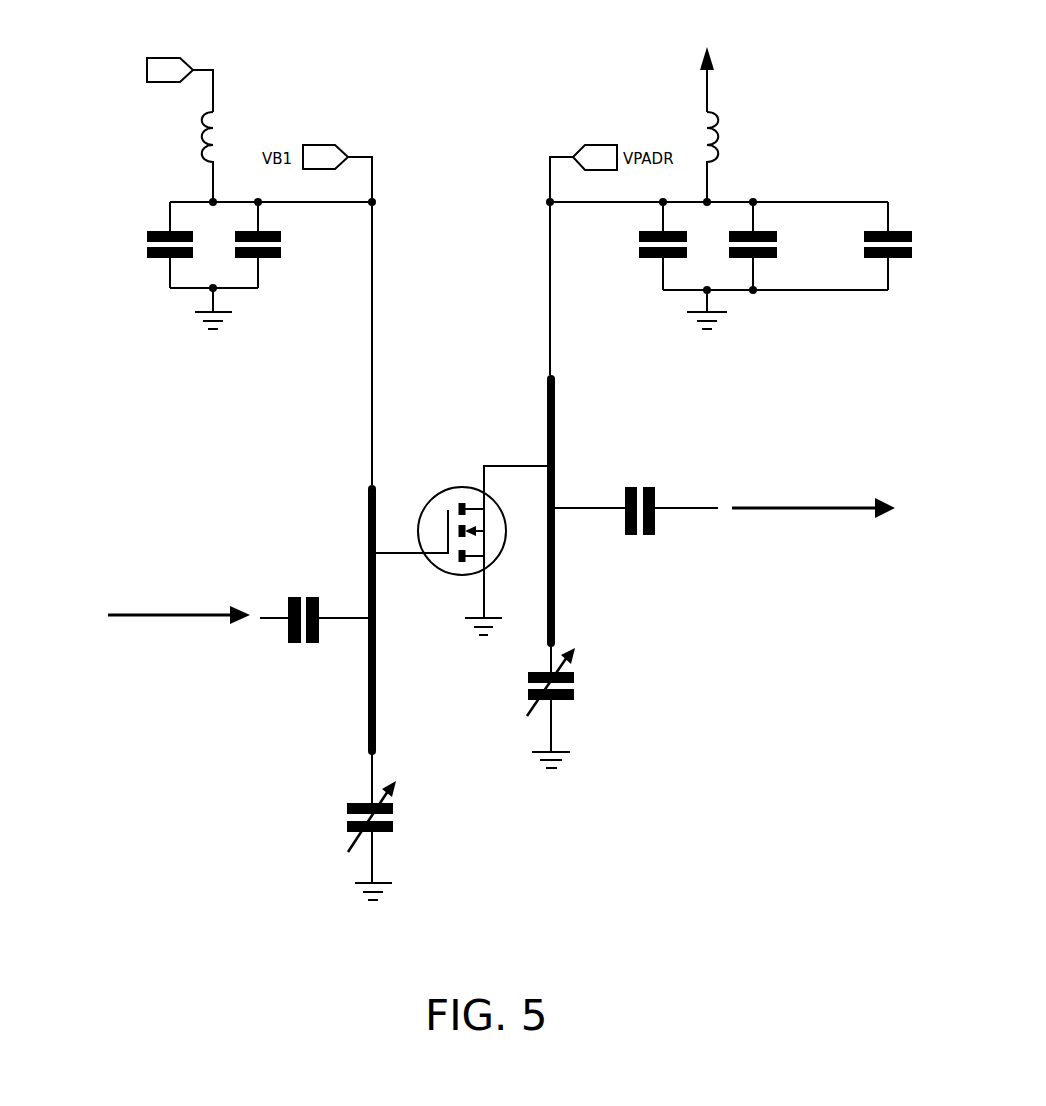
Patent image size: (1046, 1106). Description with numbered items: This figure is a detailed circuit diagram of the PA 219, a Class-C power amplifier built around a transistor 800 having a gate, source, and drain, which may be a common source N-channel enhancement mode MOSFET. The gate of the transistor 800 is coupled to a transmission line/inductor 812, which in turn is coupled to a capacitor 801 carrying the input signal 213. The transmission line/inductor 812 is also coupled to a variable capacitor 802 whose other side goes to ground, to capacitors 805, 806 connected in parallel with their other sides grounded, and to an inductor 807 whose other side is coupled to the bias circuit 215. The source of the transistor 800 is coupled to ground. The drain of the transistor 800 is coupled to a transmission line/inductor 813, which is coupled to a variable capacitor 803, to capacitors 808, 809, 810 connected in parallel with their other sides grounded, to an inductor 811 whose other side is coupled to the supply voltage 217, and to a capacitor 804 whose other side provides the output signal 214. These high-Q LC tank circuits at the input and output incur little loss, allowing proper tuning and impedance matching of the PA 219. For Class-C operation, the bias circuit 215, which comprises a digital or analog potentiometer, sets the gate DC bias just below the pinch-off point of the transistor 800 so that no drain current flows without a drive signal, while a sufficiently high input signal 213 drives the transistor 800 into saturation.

The input signal 213 is at (120, 555).
The output signal 214 is at (863, 437).
The bias circuit 215 is at (168, 55).
The supply voltage 217 is at (753, 30).
The PA 219 is at (860, 102).
The transistor 800 is at (458, 464).
The capacitor 801 is at (287, 643).
The variable capacitor 802 is at (393, 822).
The variable capacitor 803 is at (577, 683).
The capacitor 804 is at (658, 490).
The capacitor 805 is at (141, 250).
The capacitor 806 is at (283, 256).
The inductor 807 is at (195, 143).
The capacitor 808 is at (633, 260).
The capacitor 809 is at (777, 255).
The capacitor 810 is at (907, 230).
The inductor 811 is at (722, 147).
The transmission line/inductor 812 is at (377, 638).
The transmission line/inductor 813 is at (556, 448).